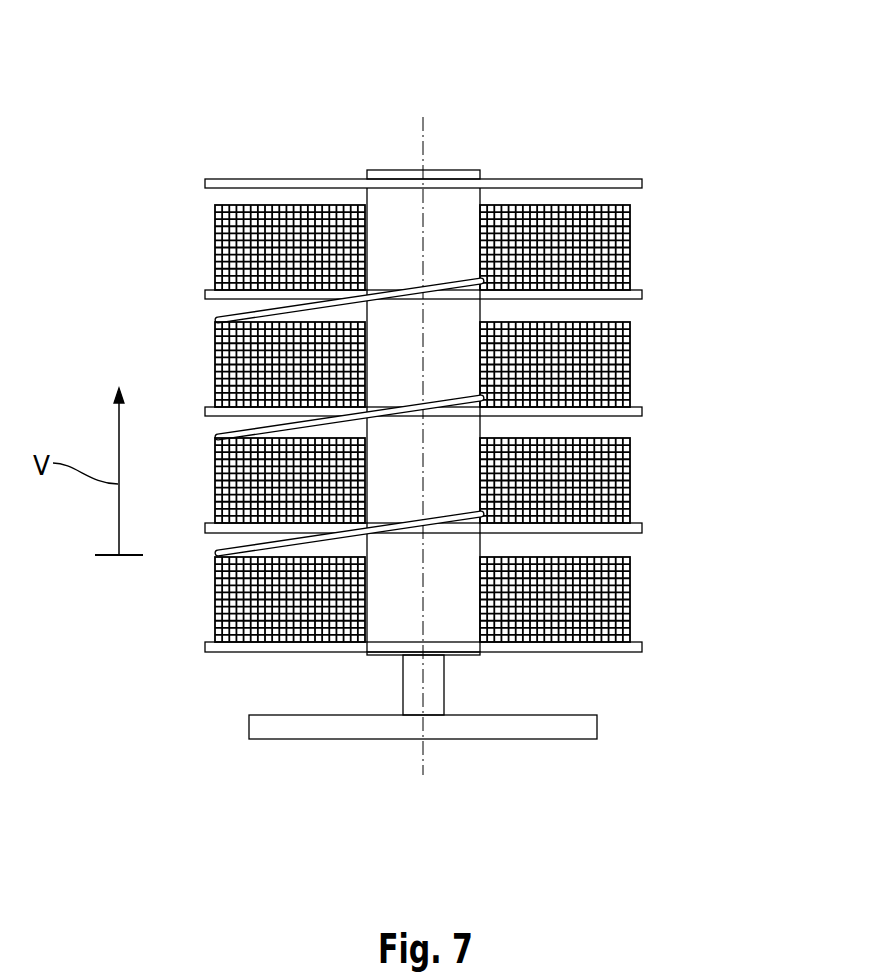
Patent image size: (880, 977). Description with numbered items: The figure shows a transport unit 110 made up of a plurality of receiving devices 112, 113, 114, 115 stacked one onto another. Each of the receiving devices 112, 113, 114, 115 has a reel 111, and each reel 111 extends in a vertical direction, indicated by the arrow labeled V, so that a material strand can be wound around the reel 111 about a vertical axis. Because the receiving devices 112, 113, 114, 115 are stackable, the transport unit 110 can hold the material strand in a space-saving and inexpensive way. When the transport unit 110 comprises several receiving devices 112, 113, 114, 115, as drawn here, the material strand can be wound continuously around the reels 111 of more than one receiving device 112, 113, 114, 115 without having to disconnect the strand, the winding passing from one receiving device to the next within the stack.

The transport unit 110 is at (176, 104).
The reel 111 is at (453, 218).
The receiving device 112 is at (612, 600).
The receiving device 113 is at (612, 480).
The receiving device 114 is at (612, 357).
The receiving device 115 is at (610, 232).